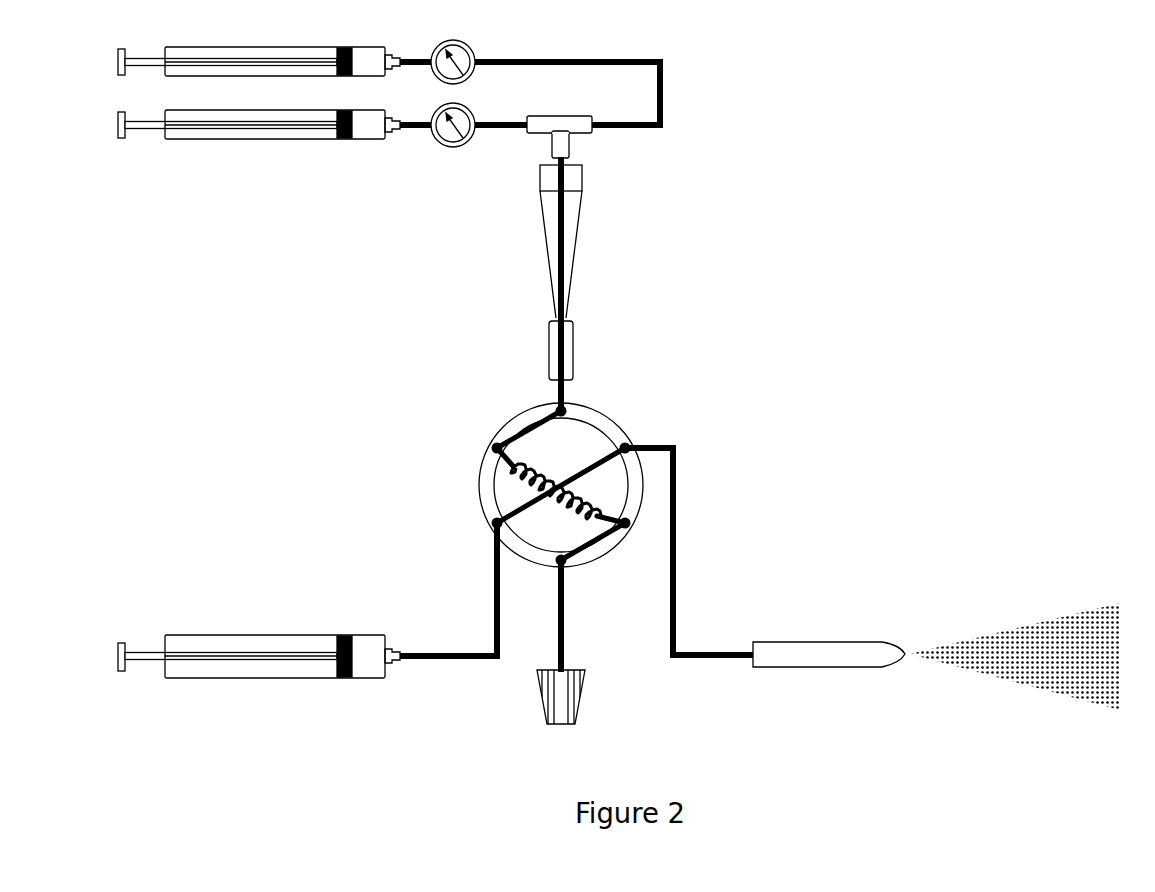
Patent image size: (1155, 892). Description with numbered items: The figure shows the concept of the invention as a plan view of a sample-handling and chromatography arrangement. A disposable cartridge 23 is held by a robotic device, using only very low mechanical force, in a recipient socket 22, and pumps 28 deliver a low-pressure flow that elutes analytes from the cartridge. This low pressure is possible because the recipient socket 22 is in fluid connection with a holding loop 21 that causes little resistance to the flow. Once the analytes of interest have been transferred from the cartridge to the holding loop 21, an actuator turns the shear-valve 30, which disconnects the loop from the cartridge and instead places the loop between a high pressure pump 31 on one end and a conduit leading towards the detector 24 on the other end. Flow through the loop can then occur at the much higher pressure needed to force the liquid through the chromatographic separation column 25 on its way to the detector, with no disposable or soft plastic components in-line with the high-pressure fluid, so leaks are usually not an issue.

The pumps 28 is at (259, 93).
The disposable cartridge 23 is at (587, 241).
The recipient socket 22 is at (582, 350).
The shear-valve 30 is at (500, 405).
The holding loop 21 is at (502, 492).
The conduit leading towards the detector 24 is at (688, 551).
The high pressure pump 31 is at (259, 639).
The chromatographic separation column 25 is at (936, 656).